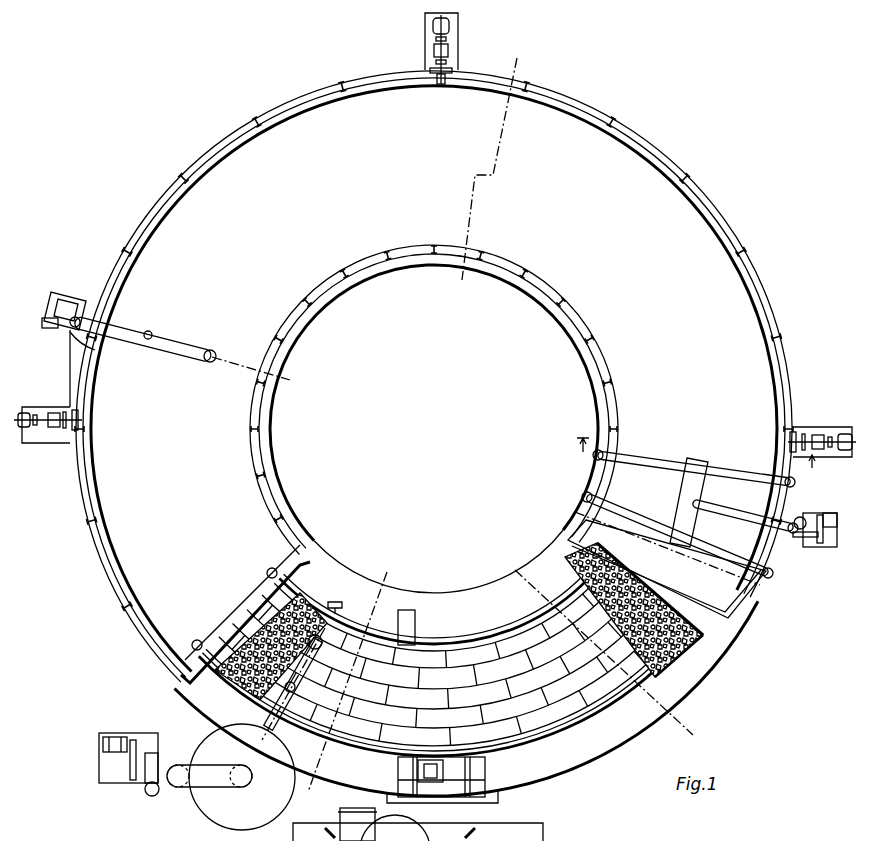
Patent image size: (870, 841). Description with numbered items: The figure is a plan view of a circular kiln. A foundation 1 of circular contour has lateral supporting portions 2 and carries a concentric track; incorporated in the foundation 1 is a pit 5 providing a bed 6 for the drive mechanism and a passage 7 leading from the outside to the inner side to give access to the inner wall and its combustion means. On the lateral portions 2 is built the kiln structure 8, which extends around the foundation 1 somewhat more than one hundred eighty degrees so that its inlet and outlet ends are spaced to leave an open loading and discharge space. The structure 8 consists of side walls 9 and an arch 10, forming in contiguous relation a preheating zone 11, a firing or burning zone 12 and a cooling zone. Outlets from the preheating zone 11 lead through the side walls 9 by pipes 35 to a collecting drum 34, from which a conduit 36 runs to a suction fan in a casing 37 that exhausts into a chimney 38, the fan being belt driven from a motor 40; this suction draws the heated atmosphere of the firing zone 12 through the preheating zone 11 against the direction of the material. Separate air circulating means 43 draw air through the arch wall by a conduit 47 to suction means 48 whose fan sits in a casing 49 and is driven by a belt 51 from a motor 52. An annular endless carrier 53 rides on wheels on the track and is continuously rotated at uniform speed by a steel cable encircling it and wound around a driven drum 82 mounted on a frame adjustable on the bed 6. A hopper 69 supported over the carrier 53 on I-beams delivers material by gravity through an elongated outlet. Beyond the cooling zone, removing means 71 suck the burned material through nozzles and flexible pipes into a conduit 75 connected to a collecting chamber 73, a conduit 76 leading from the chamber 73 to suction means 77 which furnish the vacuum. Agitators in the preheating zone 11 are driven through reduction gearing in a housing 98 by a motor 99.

The foundation 1 is at (467, 698).
The lateral supporting portions 2 is at (642, 722).
The pit 5 is at (490, 785).
The bed 6 is at (514, 568).
The passage 7 is at (415, 628).
The kiln structure 8 is at (802, 368).
The side walls 9 is at (768, 304).
The arch 10 is at (698, 238).
The preheating zone 11 is at (383, 571).
The firing or burning zone 12 is at (697, 462).
The collecting manifold or drum 34 is at (686, 496).
The pipes 35 is at (654, 461).
The conduit 36 is at (748, 498).
The fan casing 37 is at (812, 540).
The chimney 38 is at (804, 517).
The motor 40 is at (836, 515).
The air circulating means 43 is at (222, 367).
The conduit 47 is at (150, 320).
The suction means 48 is at (70, 333).
The fan casing 49 is at (78, 297).
The belt 51 is at (96, 350).
The motor 52 is at (50, 330).
The endless carrier 53 is at (434, 670).
The hopper 69 is at (582, 661).
The removing means 71 is at (292, 692).
The collecting chamber 73 is at (242, 777).
The conduit 75 is at (318, 650).
The conduit 76 is at (225, 752).
The suction means 77 is at (129, 774).
The drum 82 is at (418, 824).
The housing 98 is at (445, 52).
The motor 99 is at (448, 27).